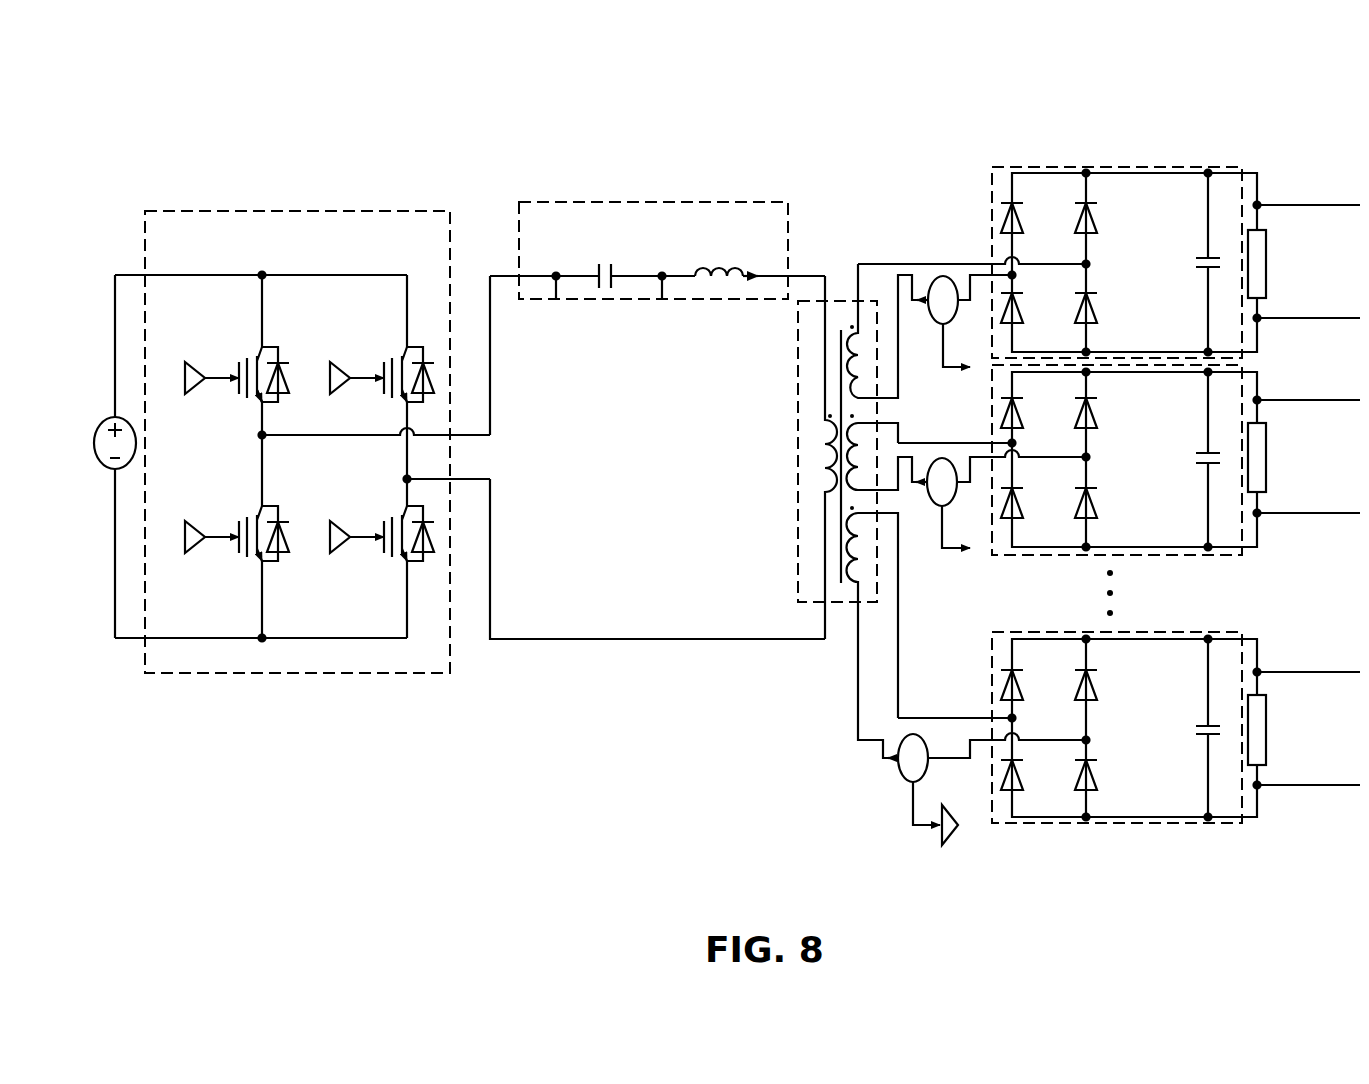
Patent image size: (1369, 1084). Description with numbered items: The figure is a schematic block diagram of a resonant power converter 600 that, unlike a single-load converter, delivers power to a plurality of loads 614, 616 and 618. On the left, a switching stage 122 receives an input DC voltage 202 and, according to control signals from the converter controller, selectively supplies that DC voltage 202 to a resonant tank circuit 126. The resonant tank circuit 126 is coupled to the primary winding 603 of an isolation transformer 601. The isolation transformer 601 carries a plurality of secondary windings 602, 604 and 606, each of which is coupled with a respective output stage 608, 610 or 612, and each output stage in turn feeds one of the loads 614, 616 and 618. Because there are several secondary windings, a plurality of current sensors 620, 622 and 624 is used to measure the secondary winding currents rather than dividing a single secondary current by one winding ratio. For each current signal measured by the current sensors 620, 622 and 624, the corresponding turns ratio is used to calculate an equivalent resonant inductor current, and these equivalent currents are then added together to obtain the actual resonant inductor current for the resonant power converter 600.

The resonant power converter 600 is at (1220, 90).
The switching stage 122 is at (297, 207).
The resonant tank circuit 126 is at (634, 200).
The input DC voltage 202 is at (100, 421).
The isolation transformer 601 is at (797, 412).
The secondary winding 602 is at (860, 330).
The primary winding 603 is at (825, 452).
The secondary winding 604 is at (847, 490).
The secondary winding 606 is at (852, 586).
The output stage 608 is at (1128, 167).
The output stage 610 is at (1213, 559).
The output stage 612 is at (1188, 827).
The load 614 is at (1268, 240).
The load 616 is at (1268, 432).
The load 618 is at (1268, 700).
The current sensor 620 is at (950, 273).
The current sensor 622 is at (931, 510).
The current sensor 624 is at (880, 760).